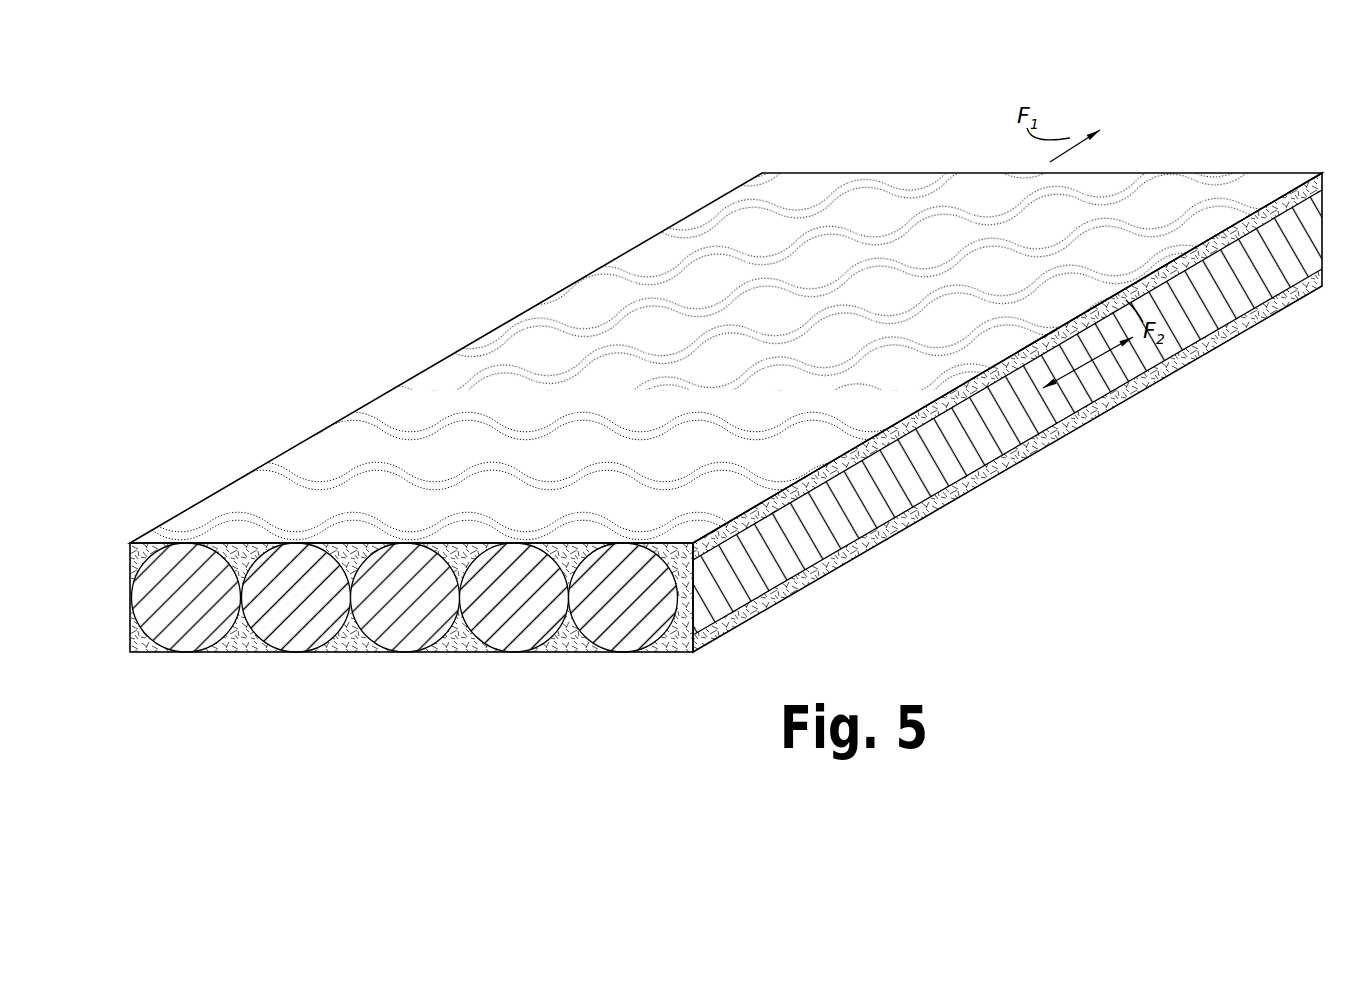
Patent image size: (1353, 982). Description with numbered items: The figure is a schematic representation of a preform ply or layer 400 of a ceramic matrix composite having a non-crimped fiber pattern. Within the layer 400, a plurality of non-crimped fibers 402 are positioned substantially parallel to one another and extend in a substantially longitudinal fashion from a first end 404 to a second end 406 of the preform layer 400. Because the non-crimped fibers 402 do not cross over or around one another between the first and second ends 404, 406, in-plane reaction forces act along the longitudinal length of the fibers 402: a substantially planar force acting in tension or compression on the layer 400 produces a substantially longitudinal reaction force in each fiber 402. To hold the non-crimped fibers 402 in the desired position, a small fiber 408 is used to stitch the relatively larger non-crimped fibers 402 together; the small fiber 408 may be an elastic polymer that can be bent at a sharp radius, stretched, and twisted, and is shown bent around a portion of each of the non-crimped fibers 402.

The preform ply or layer 400 is at (553, 142).
The non-crimped fibers 402 is at (490, 610).
The first end 404 is at (356, 660).
The second end 406 is at (1128, 163).
The small fiber 408 is at (533, 312).